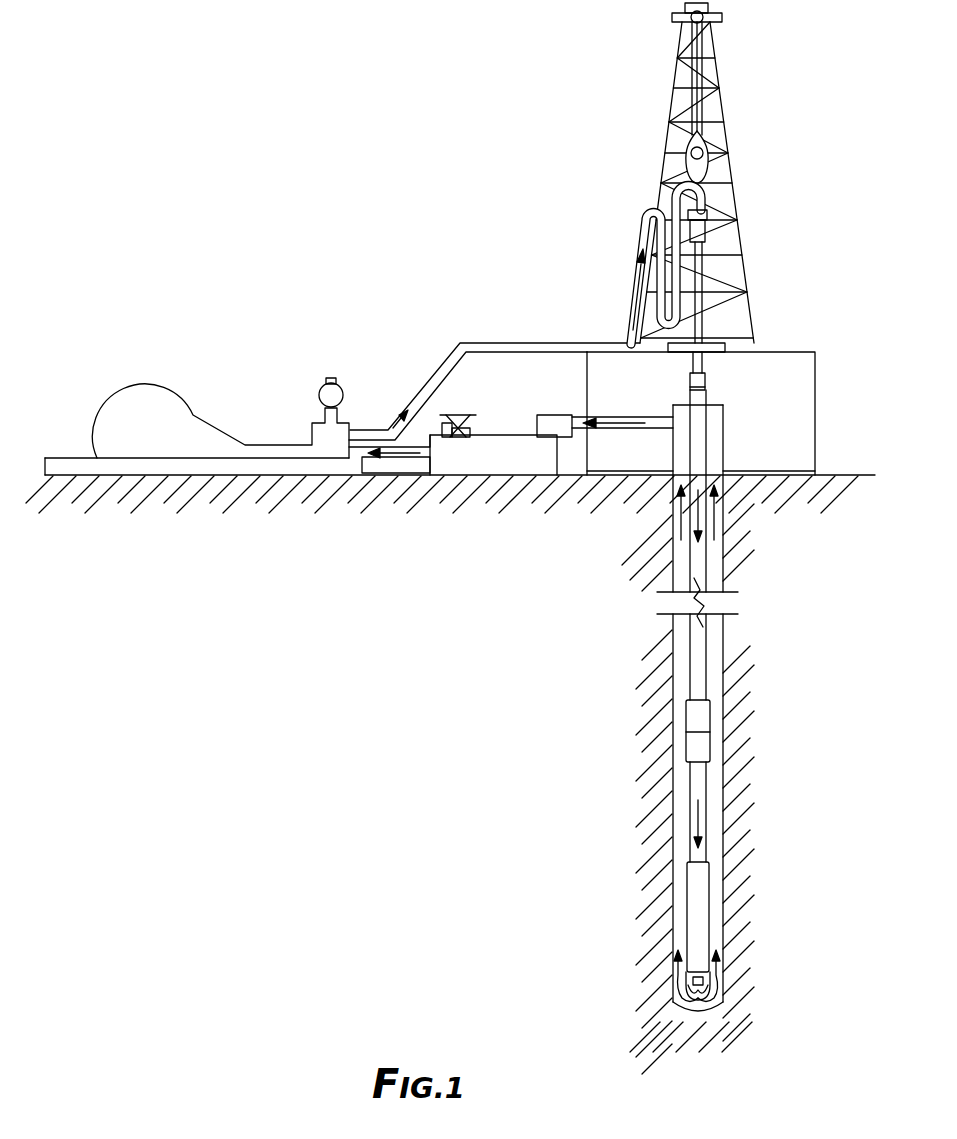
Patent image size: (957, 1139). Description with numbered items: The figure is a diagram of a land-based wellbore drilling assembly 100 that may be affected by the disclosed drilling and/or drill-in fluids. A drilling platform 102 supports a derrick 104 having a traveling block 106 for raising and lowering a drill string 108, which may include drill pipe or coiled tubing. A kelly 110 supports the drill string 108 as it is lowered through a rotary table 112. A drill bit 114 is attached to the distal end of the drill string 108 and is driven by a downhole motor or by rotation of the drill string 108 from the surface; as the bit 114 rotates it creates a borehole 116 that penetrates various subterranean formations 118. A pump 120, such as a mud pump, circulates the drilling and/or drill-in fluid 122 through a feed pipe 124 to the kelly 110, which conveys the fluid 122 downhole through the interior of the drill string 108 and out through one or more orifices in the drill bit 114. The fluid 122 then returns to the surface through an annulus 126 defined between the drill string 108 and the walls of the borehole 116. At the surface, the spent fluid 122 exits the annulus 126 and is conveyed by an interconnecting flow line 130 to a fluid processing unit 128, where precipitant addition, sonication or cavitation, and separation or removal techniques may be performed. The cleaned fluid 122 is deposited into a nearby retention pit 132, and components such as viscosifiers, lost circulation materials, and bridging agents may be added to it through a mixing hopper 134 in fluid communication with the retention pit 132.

The wellbore drilling assembly 100 is at (430, 85).
The drilling platform 102 is at (816, 366).
The derrick 104 is at (720, 94).
The traveling block 106 is at (712, 148).
The drill string 108 is at (700, 571).
The kelly 110 is at (702, 262).
The rotary table 112 is at (725, 348).
The drill bit 114 is at (704, 990).
The borehole 116 is at (730, 660).
The subterranean formations 118 is at (608, 697).
The pump 120 is at (167, 442).
The drilling and/or drill-in fluid 122 is at (371, 431).
The feed pipe 124 is at (479, 342).
The annulus 126 is at (712, 818).
The fluid processing unit 128 is at (550, 417).
The interconnecting flow line 130 is at (657, 430).
The retention pit 132 is at (530, 462).
The mixing hopper 134 is at (447, 437).